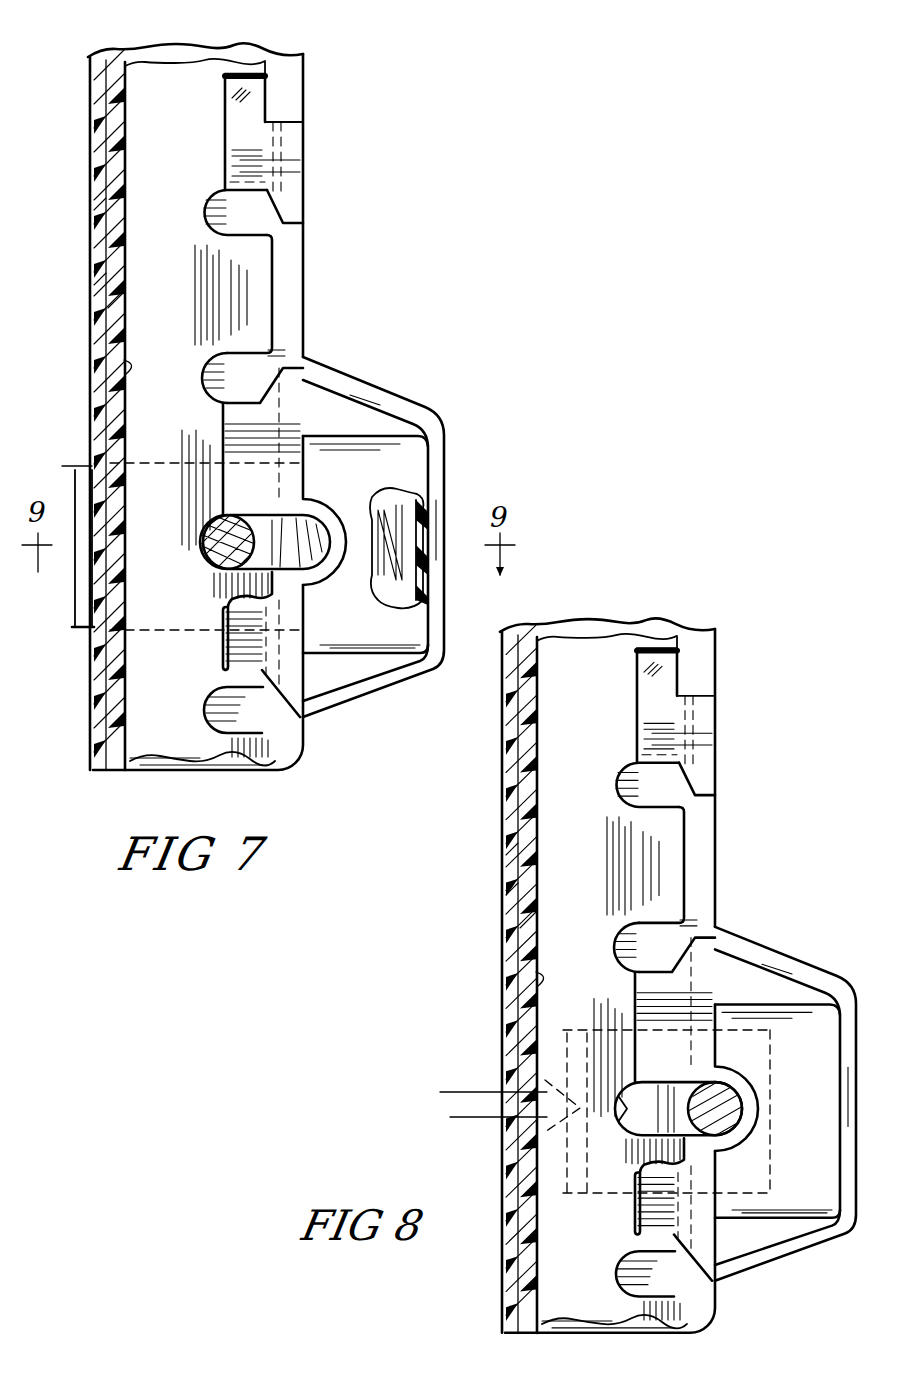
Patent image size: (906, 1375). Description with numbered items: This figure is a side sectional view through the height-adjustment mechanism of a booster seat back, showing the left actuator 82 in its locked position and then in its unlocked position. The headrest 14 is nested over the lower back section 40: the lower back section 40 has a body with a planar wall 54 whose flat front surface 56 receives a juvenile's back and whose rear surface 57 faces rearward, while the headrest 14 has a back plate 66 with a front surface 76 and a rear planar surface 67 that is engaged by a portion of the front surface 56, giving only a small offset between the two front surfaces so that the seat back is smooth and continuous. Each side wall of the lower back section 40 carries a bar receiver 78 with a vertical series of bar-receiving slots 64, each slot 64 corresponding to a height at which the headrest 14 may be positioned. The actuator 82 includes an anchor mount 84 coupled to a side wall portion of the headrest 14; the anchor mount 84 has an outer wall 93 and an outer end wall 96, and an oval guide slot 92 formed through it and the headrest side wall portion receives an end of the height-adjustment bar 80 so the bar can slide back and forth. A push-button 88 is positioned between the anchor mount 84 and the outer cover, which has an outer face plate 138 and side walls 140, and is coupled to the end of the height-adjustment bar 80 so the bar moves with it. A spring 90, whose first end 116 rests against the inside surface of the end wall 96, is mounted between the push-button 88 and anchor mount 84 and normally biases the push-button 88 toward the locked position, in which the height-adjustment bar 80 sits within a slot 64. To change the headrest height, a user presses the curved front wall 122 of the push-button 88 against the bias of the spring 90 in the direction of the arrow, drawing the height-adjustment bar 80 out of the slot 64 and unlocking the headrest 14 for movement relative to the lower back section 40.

In FIG. 7, the headrest 14 is at (90, 218).
In FIG. 8, the headrest 14 is at (493, 947).
In FIG. 7, the lower back section 40 is at (146, 85).
In FIG. 8, the lower back section 40 is at (572, 665).
In FIG. 7, the planar wall 54 is at (113, 100).
In FIG. 8, the planar wall 54 is at (525, 797).
In FIG. 7, the front surface 56 is at (95, 298).
In FIG. 8, the front surface 56 is at (520, 920).
In FIG. 7, the rear surface 57 is at (110, 366).
In FIG. 8, the rear surface 57 is at (540, 972).
In FIG. 7, the bar-receiving slots 64 is at (217, 224).
In FIG. 8, the bar-receiving slots 64 is at (640, 797).
In FIG. 7, the back plate 66 is at (93, 278).
In FIG. 8, the back plate 66 is at (510, 888).
In FIG. 7, the rear planar surface 67 is at (97, 210).
In FIG. 8, the rear planar surface 67 is at (517, 848).
In FIG. 7, the front surface 76 is at (93, 148).
In FIG. 8, the front surface 76 is at (502, 730).
In FIG. 7, the bar receiver 78 is at (213, 185).
In FIG. 8, the bar receiver 78 is at (621, 752).
In FIG. 7, the height-adjustment bar 80 is at (215, 565).
In FIG. 8, the height-adjustment bar 80 is at (727, 1100).
In FIG. 7, the actuator 82 is at (307, 350).
In FIG. 8, the actuator 82 is at (736, 928).
In FIG. 7, the anchor mount 84 is at (335, 658).
In FIG. 8, the anchor mount 84 is at (754, 1226).
In FIG. 7, the push-button 88 is at (70, 634).
In FIG. 8, the push-button 88 is at (545, 1037).
In FIG. 7, the spring 90 is at (383, 484).
In FIG. 7, the guide slot 92 is at (315, 585).
In FIG. 8, the guide slot 92 is at (630, 1096).
In FIG. 7, the outer wall 93 is at (325, 445).
In FIG. 8, the outer wall 93 is at (790, 1020).
In FIG. 7, the outer end wall 96 is at (428, 530).
In FIG. 7, the first end 116 is at (418, 508).
In FIG. 7, the curved front wall 122 is at (62, 466).
In FIG. 7, the outer face plate 138 is at (380, 420).
In FIG. 8, the outer face plate 138 is at (745, 975).
In FIG. 7, the side walls 140 is at (372, 398).
In FIG. 8, the side walls 140 is at (775, 960).